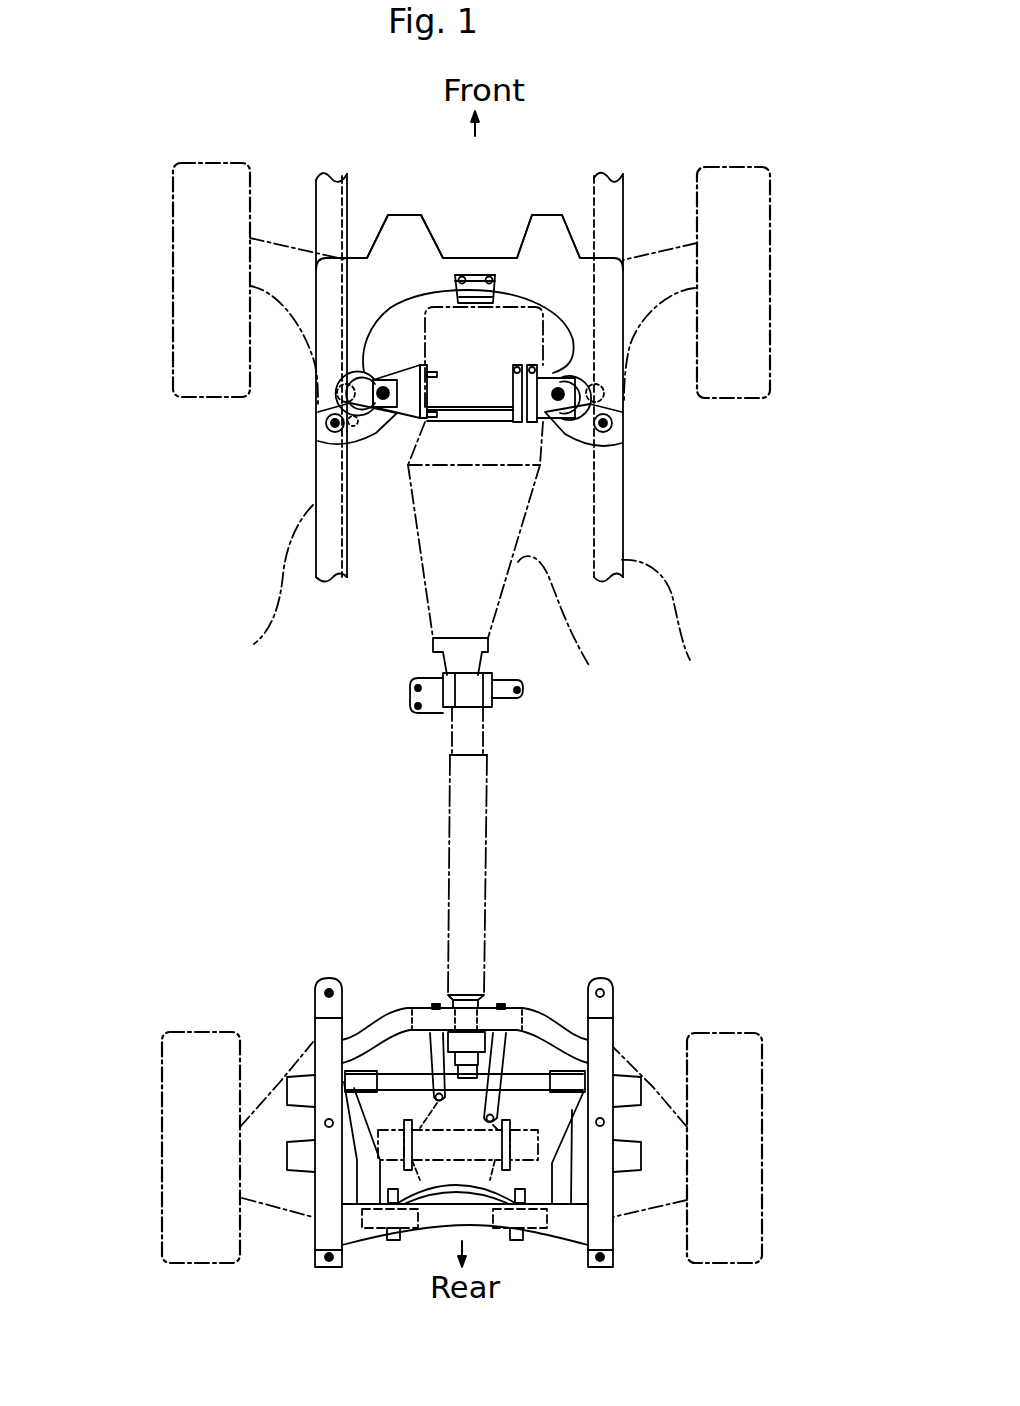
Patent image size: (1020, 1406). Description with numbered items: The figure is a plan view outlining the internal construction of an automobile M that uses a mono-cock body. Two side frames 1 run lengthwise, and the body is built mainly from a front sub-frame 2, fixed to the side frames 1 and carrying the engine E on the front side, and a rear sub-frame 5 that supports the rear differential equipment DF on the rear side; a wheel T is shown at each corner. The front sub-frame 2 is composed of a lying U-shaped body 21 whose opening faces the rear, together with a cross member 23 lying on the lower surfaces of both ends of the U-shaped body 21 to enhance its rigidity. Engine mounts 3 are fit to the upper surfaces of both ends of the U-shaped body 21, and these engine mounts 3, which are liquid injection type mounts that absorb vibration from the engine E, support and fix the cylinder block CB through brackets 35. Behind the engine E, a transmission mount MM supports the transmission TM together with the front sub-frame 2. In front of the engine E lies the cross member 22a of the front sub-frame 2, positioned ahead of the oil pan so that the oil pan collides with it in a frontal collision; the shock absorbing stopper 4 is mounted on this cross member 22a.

The side frame 1 is at (254, 644).
The front sub-frame 2 is at (584, 252).
The engine mount 3 is at (300, 440).
The shock absorbing stopper 4 is at (472, 287).
The rear sub-frame 5 is at (627, 1040).
The U-shaped body 21 is at (600, 407).
The cross member 22a is at (453, 270).
The cross member 23 is at (547, 408).
The bracket 35 is at (410, 393).
The engine E is at (413, 338).
The automobile M is at (633, 181).
The wheel T is at (173, 270).
The cylinder block CB is at (500, 300).
The transmission TM is at (590, 667).
The transmission mount MM is at (523, 690).
The rear differential equipment DF is at (527, 1160).